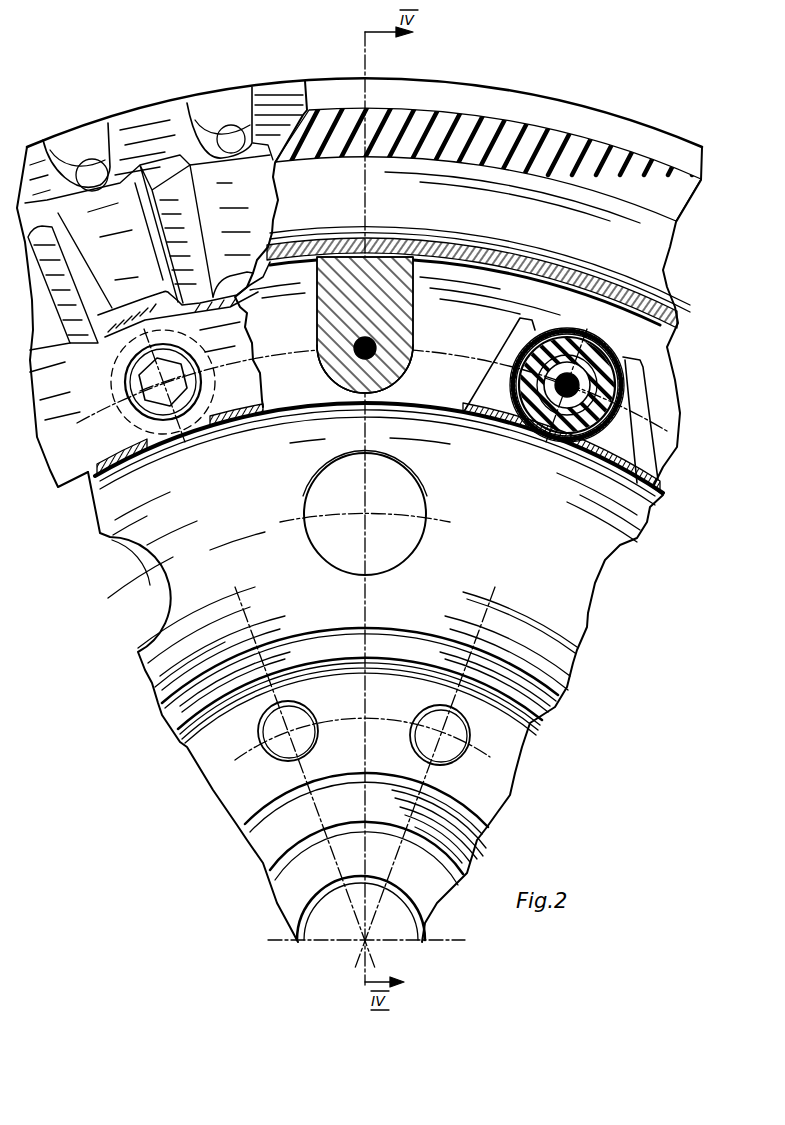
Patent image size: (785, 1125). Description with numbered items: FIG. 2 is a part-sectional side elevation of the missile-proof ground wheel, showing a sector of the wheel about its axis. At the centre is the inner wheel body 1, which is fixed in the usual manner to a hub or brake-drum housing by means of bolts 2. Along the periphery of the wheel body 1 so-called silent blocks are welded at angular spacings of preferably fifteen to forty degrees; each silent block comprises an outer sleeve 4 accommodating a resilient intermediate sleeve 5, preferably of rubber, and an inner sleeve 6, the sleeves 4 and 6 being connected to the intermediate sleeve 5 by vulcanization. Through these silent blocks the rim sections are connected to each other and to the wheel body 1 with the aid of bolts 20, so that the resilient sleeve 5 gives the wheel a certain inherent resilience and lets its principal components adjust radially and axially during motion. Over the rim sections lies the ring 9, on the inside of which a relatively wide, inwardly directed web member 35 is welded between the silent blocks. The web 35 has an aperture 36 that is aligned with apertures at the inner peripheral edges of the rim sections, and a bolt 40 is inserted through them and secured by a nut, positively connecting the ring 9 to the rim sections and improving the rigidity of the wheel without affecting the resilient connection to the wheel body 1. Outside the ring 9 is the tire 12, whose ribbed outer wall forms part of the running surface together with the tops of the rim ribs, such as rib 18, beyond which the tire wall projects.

The inner wheel body 1 is at (455, 579).
The bolts 2 is at (434, 754).
The sleeve 4 is at (203, 356).
The intermediate sleeve 5 is at (548, 425).
The inner sleeve 6 is at (518, 427).
The ring 9 is at (503, 261).
The tire 12 is at (520, 140).
The rib 18 is at (135, 263).
The bolts 20 is at (515, 373).
The web member 35 is at (393, 320).
The aperture 36 is at (393, 355).
The bolt 40 is at (355, 348).